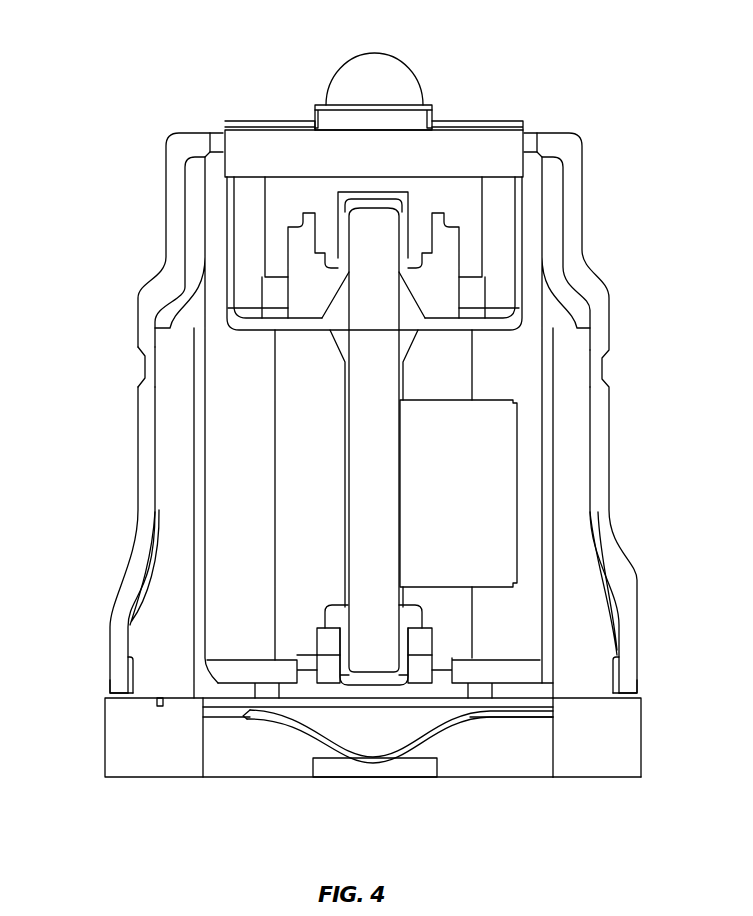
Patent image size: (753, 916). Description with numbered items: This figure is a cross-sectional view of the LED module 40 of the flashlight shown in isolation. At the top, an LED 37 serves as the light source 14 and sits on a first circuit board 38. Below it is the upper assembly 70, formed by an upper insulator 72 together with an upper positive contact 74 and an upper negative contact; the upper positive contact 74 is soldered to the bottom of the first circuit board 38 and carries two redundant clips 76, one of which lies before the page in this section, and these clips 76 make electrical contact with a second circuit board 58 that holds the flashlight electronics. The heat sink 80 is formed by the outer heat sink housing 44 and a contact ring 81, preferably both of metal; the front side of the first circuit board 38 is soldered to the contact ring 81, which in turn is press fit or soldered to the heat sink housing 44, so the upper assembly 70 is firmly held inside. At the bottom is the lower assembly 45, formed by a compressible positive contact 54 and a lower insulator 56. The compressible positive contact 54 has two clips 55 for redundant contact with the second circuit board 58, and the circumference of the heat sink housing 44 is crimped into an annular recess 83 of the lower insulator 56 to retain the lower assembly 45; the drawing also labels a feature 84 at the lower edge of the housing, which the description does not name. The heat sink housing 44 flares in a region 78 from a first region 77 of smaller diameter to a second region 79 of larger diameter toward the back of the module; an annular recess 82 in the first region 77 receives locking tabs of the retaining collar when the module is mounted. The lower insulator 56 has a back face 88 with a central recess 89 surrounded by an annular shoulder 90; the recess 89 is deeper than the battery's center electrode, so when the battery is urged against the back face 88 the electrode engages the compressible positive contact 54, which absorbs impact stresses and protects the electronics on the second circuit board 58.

The light source 14 is at (386, 68).
The LED 37 is at (318, 110).
The first circuit board 38 is at (487, 152).
The LED module 40 is at (603, 232).
The heat sink housing 44 is at (624, 548).
The lower assembly 45 is at (100, 762).
The compressible positive contact 54 is at (445, 730).
The clips 55 is at (323, 608).
The lower insulator 56 is at (627, 752).
The second circuit board 58 is at (376, 452).
The upper assembly 70 is at (195, 209).
The upper insulator 72 is at (505, 203).
The upper positive contact 74 is at (300, 262).
The clips 76 is at (462, 258).
The first region 77 is at (138, 405).
The flared region 78 is at (130, 560).
The second region 79 is at (118, 675).
The heat sink 80 is at (160, 139).
The contact ring 81 is at (248, 126).
The annular recess 82 is at (144, 367).
The annular recess 83 is at (622, 665).
The latch tabs 84 is at (124, 667).
The back face 88 is at (200, 785).
The recess 89 is at (249, 752).
The annular shoulder 90 is at (610, 780).